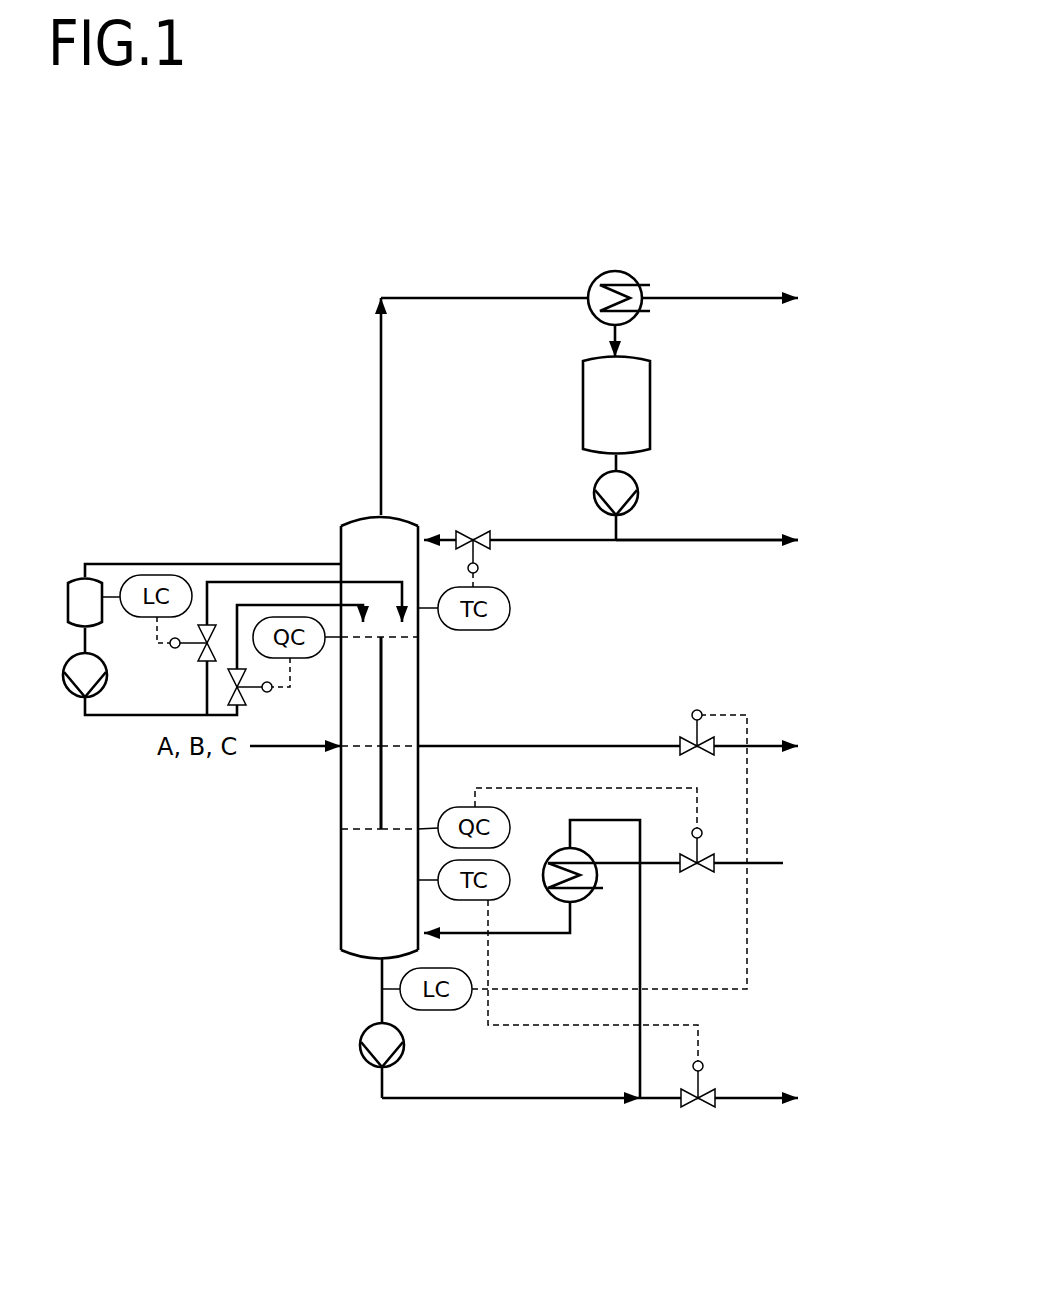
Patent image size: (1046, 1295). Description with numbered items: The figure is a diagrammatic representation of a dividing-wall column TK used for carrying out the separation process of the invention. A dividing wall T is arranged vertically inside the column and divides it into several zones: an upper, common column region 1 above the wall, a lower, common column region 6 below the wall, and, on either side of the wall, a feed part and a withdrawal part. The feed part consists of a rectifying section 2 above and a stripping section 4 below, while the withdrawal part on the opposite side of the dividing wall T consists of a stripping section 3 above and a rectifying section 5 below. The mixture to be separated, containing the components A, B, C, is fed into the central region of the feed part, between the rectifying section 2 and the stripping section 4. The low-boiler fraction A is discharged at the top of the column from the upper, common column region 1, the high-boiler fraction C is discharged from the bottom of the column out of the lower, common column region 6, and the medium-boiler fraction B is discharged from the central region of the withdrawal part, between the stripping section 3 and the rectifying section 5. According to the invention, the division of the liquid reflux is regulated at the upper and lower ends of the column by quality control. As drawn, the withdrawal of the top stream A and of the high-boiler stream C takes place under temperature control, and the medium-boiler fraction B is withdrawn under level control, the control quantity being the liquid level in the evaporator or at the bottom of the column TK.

The dividing-wall column TK is at (353, 712).
The dividing wall T is at (385, 713).
The upper, common column region 1 is at (379, 581).
The rectifying section 2 is at (361, 691).
The stripping section 3 is at (399, 691).
The stripping section 4 is at (361, 787).
The rectifying section 5 is at (399, 787).
The lower, common column region 6 is at (379, 889).
The low-boiler fraction A is at (626, 550).
The medium-boiler fraction B is at (623, 735).
The high-boiler fraction C is at (606, 1087).